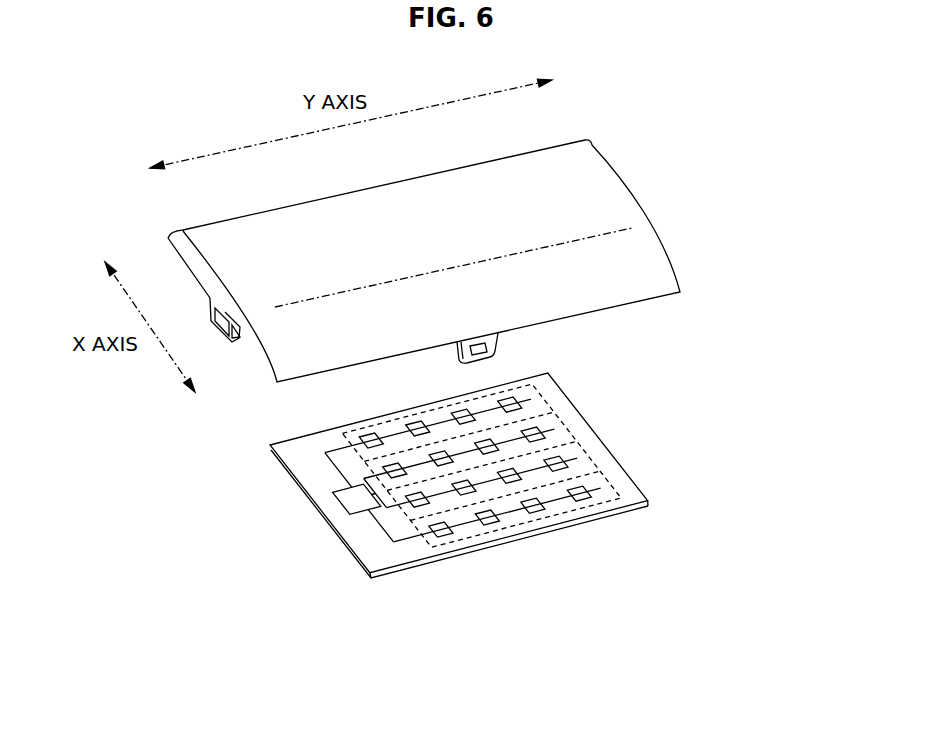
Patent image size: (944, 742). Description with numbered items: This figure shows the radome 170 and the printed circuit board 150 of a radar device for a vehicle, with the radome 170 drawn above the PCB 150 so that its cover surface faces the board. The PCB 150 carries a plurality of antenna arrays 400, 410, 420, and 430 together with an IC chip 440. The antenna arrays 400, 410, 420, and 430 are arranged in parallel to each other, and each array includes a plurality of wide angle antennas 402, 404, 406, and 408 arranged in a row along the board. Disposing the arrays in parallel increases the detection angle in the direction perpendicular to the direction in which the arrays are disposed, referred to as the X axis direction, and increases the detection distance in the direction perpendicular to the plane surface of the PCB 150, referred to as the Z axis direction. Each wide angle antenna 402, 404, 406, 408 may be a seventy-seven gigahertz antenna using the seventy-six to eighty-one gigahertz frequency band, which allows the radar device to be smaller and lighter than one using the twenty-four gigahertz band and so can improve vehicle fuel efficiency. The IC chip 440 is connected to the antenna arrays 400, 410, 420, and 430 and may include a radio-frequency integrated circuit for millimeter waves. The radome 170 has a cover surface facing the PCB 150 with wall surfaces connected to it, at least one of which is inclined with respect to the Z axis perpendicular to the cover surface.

The printed circuit board 150 is at (648, 505).
The radome 170 is at (623, 178).
The antenna array 400 is at (598, 488).
The wide angle antenna 402 is at (438, 535).
The wide angle antenna 404 is at (483, 525).
The wide angle antenna 406 is at (530, 512).
The wide angle antenna 408 is at (577, 502).
The antenna array 410 is at (577, 462).
The antenna array 420 is at (553, 432).
The antenna array 430 is at (530, 392).
The IC chip 440 is at (358, 500).